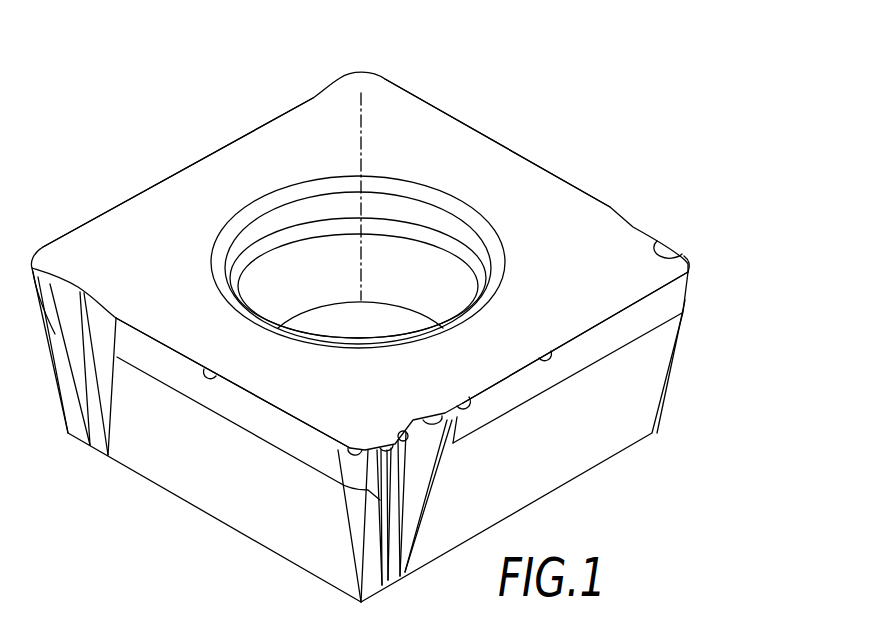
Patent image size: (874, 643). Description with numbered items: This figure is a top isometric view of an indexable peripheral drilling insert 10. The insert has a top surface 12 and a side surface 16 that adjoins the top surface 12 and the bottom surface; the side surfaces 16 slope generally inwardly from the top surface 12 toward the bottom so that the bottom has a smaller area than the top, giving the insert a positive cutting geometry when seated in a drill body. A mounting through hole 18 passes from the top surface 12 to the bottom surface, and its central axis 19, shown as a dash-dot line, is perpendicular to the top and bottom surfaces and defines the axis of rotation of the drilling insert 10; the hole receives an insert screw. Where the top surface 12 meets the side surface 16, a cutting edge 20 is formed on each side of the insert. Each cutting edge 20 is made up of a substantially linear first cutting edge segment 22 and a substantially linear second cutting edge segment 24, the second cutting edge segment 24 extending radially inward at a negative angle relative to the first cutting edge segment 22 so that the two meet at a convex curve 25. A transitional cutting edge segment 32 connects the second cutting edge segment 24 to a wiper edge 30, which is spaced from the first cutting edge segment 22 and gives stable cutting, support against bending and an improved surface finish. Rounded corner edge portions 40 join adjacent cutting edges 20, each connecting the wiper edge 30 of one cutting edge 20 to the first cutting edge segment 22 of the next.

The drilling insert 10 is at (389, 302).
The top surface 12 is at (463, 142).
The side surface 16 is at (230, 507).
The mounting through hole 18 is at (433, 253).
The central axis 19 is at (362, 140).
The cutting edge 20 is at (153, 158).
The first cutting edge segment 22 is at (214, 370).
The second cutting edge segment 24 is at (432, 419).
The convex curve 25 is at (462, 402).
The wiper edge 30 is at (386, 446).
The transitional cutting edge segment 32 is at (402, 431).
The corner edge portion 40 is at (357, 447).